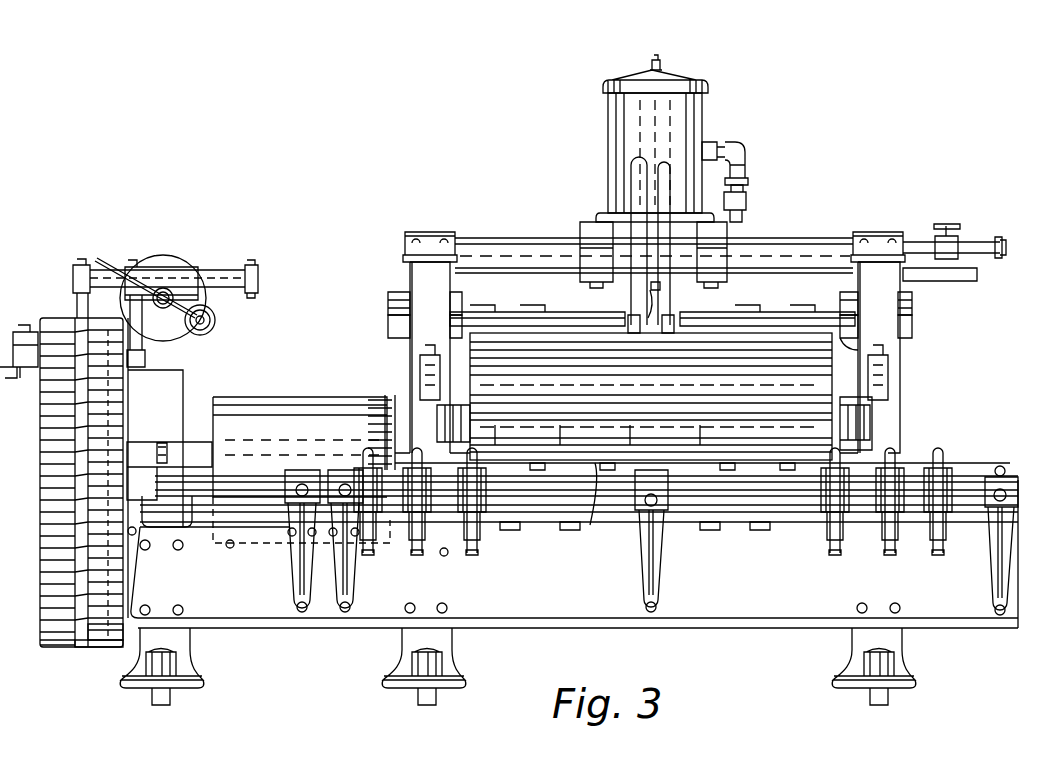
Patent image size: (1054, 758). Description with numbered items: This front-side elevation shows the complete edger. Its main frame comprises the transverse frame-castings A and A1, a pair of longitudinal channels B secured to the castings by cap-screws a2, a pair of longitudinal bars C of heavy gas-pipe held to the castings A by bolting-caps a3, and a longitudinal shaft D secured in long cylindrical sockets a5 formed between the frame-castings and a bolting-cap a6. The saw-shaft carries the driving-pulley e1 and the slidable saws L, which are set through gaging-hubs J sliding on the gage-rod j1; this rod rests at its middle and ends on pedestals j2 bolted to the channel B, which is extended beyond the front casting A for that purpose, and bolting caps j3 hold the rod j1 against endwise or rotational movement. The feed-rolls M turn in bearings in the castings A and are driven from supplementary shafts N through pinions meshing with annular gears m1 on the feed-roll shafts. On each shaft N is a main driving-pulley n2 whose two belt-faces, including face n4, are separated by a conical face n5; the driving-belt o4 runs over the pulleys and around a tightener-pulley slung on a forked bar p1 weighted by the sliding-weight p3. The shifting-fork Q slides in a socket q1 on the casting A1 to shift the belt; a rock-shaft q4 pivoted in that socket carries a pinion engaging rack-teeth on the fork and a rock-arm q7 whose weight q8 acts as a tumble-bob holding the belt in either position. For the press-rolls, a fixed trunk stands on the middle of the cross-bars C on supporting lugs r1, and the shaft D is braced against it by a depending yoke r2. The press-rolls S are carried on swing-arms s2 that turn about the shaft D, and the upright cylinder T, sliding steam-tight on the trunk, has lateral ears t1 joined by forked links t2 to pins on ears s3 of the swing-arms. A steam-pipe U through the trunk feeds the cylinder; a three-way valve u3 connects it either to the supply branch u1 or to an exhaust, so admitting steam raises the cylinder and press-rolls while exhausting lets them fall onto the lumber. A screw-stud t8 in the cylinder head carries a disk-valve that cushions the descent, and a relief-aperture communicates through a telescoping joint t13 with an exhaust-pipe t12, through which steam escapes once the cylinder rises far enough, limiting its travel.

The longitudinal channels B is at (580, 615).
The transverse frame-casting A is at (916, 358).
The transverse frame-casting A1 is at (196, 372).
The main feed-roll driving-pulley n2 is at (40, 536).
The belt-face n4 is at (48, 647).
The conical face n5 is at (80, 648).
The driving-belt o4 is at (102, 640).
The shifting-fork Q is at (232, 262).
The forked bar p1 is at (222, 278).
The socket q1 is at (128, 300).
The sliding-weight p3 is at (175, 258).
The rock-shaft q4 is at (163, 308).
The weight q8 is at (215, 320).
The rock-arm q7 is at (106, 262).
The driving-pulley e1 is at (282, 397).
The annular gear m1 is at (360, 460).
The supplementary shaft N is at (252, 478).
The pedestal j2 is at (1026, 555).
The bolting cap j3 is at (1004, 467).
The gaging-hub J is at (880, 520).
The gage-rod j1 is at (538, 505).
The feed-roll M is at (593, 509).
The cap-screw a2 is at (150, 550).
The press-roll S is at (705, 338).
The longitudinal shaft D is at (580, 300).
The swing-arm s2 is at (755, 312).
The ear s3 is at (664, 322).
The depending yoke r2 is at (674, 308).
The forked link t2 is at (660, 288).
The saw L is at (800, 433).
The bolting-cap a3 is at (886, 218).
The longitudinal bar C is at (815, 232).
The supporting lug r1 is at (770, 240).
The upright cylinder T is at (612, 105).
The screw-stud t8 is at (661, 62).
The lateral ear t1 is at (665, 188).
The telescoping joint t13 is at (748, 181).
The exhaust-pipe t12 is at (990, 270).
The steam-pipe U is at (920, 242).
The three-way valve u3 is at (952, 224).
The supply branch u1 is at (976, 247).
The cylindrical socket a5 is at (926, 298).
The bolting-cap a6 is at (940, 338).